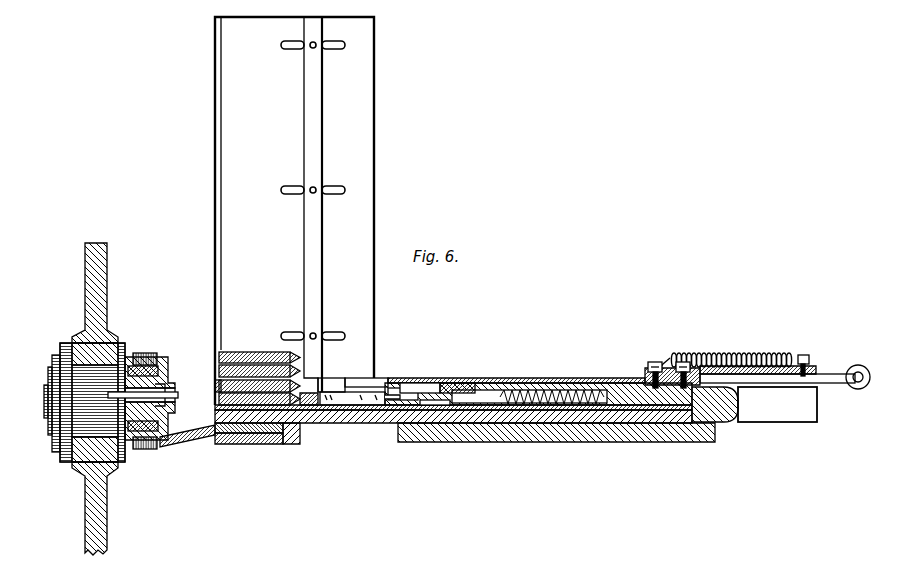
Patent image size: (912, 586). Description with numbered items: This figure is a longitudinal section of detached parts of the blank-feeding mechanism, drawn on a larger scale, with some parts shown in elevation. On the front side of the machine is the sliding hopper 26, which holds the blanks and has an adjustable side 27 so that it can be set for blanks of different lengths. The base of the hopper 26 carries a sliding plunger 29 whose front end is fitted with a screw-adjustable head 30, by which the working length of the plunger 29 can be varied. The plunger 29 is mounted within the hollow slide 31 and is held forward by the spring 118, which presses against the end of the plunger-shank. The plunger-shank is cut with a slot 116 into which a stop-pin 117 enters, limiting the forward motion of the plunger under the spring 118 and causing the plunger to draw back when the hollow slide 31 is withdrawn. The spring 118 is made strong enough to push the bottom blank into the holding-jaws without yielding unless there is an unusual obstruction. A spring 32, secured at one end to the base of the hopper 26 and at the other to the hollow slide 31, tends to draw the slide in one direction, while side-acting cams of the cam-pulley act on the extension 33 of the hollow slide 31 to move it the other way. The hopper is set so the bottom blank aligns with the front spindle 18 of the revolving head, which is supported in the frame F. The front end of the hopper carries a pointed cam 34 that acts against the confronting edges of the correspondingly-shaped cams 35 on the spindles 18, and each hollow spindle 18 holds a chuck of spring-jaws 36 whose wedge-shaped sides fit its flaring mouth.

The frame F is at (107, 515).
The spindle 18 is at (160, 368).
The sliding hopper 26 is at (748, 406).
The adjustable side 27 is at (322, 280).
The sliding plunger 29 is at (352, 399).
The screw-adjustable head 30 is at (316, 400).
The hollow slide 31 is at (616, 383).
The spring 32 is at (726, 355).
The extension 33 is at (851, 382).
The pointed cam 34 is at (183, 444).
The cam 35 is at (147, 353).
The spring-jaws 36 is at (170, 376).
The slot 116 is at (425, 386).
The stop-pin 117 is at (462, 386).
The spring 118 is at (522, 384).